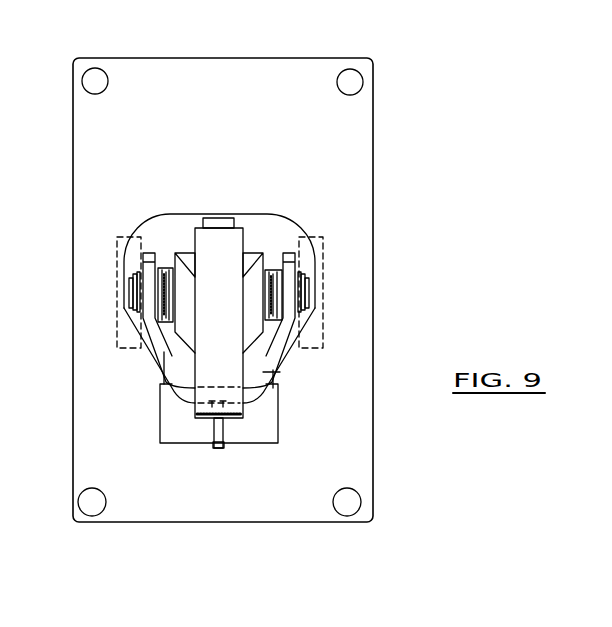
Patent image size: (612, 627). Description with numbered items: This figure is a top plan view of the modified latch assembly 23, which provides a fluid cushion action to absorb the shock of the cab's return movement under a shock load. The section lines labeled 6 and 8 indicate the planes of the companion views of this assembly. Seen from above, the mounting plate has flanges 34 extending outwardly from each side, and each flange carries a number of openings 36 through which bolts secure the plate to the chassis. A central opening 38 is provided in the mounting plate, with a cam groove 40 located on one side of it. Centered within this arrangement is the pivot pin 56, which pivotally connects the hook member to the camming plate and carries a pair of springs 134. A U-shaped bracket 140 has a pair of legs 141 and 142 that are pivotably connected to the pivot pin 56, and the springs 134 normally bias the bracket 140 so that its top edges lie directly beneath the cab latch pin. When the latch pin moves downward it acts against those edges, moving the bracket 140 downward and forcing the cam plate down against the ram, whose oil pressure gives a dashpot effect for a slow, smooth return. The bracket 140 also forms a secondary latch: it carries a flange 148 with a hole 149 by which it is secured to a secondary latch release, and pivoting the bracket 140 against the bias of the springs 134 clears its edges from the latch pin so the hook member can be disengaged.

The section line 6- 6 is at (213, 43).
The section line 8- 8 is at (52, 290).
The modified latch assembly 23 is at (116, 250).
The flanges 34 is at (293, 58).
The openings 36 is at (84, 81).
The central opening 38 is at (256, 213).
The cam groove 40 is at (183, 443).
The pivot pin 56 is at (304, 297).
The spring 134 is at (165, 268).
The U-shaped bracket 140 is at (266, 372).
The leg 141 is at (292, 253).
The leg 142 is at (149, 254).
The flange 148 is at (221, 449).
The hole 149 is at (226, 431).